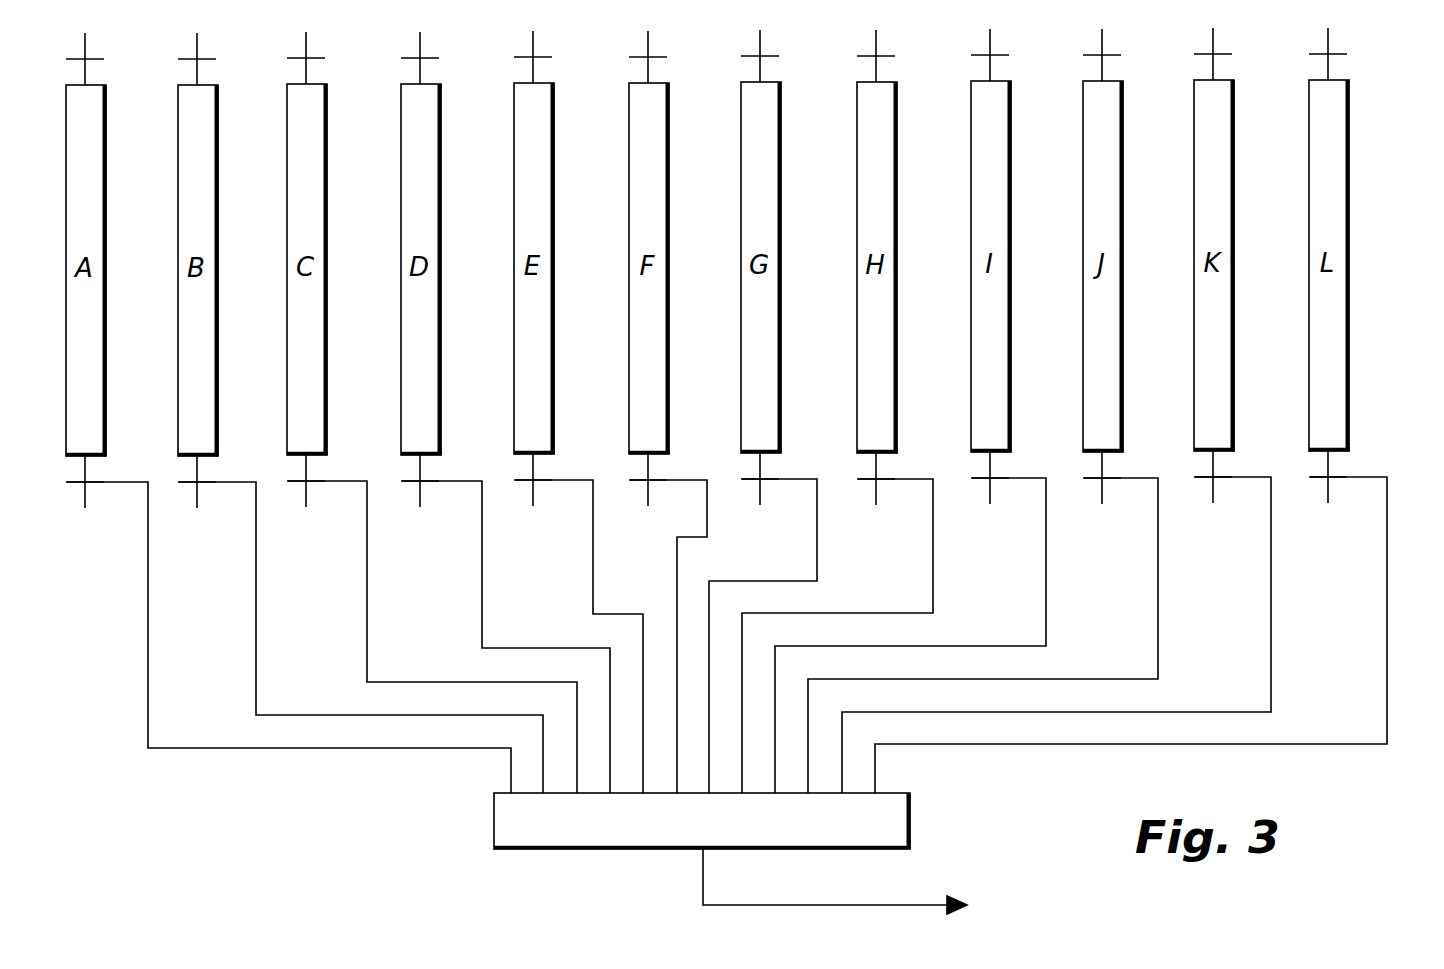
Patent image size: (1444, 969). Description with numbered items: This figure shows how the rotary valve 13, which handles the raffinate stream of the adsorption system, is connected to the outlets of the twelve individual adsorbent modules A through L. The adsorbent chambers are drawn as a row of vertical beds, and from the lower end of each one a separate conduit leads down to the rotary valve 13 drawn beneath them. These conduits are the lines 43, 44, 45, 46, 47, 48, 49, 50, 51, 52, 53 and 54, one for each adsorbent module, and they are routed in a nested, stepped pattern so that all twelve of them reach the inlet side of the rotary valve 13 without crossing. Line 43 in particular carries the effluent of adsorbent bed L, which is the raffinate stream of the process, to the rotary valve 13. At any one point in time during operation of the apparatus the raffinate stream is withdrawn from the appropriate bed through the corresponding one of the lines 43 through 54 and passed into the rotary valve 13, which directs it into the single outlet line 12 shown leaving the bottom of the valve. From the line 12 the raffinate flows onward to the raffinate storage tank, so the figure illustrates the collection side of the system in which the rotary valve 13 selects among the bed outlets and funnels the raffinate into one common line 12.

The line 12 is at (879, 905).
The rotary valve 13 is at (912, 821).
The line 43 is at (1046, 548).
The line 44 is at (1158, 548).
The line 45 is at (1271, 548).
The line 46 is at (1387, 573).
The line 47 is at (933, 548).
The line 48 is at (817, 548).
The line 49 is at (677, 551).
The line 50 is at (593, 548).
The line 51 is at (482, 548).
The line 52 is at (367, 548).
The line 53 is at (256, 548).
The line 54 is at (148, 548).